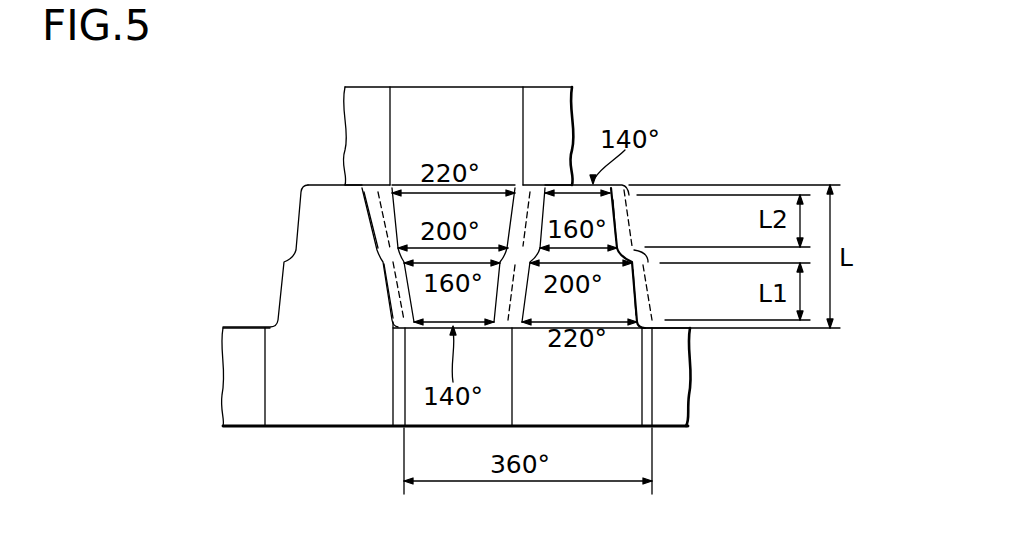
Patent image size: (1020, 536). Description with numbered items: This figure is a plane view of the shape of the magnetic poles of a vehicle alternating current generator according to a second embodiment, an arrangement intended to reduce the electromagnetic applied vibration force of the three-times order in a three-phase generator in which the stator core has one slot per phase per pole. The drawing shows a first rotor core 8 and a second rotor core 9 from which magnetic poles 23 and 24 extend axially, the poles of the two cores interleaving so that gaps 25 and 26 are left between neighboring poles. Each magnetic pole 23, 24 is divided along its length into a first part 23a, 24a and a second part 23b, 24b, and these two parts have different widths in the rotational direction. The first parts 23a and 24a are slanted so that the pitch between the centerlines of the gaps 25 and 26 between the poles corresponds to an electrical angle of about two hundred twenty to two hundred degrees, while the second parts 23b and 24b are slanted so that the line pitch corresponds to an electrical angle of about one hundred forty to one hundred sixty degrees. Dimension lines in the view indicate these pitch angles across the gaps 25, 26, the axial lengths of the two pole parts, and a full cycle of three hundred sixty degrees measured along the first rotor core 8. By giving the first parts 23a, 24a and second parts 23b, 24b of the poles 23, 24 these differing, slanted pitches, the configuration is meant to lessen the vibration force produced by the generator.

The first rotor core 8 is at (345, 428).
The second rotor core 9 is at (462, 112).
The magnetic pole 23 is at (674, 293).
The first part 23a is at (633, 290).
The second part 23b is at (615, 208).
The magnetic pole 24 is at (418, 210).
The first part 24a is at (398, 219).
The second part 24b is at (425, 297).
The gap 25 is at (543, 183).
The gap 26 is at (392, 288).